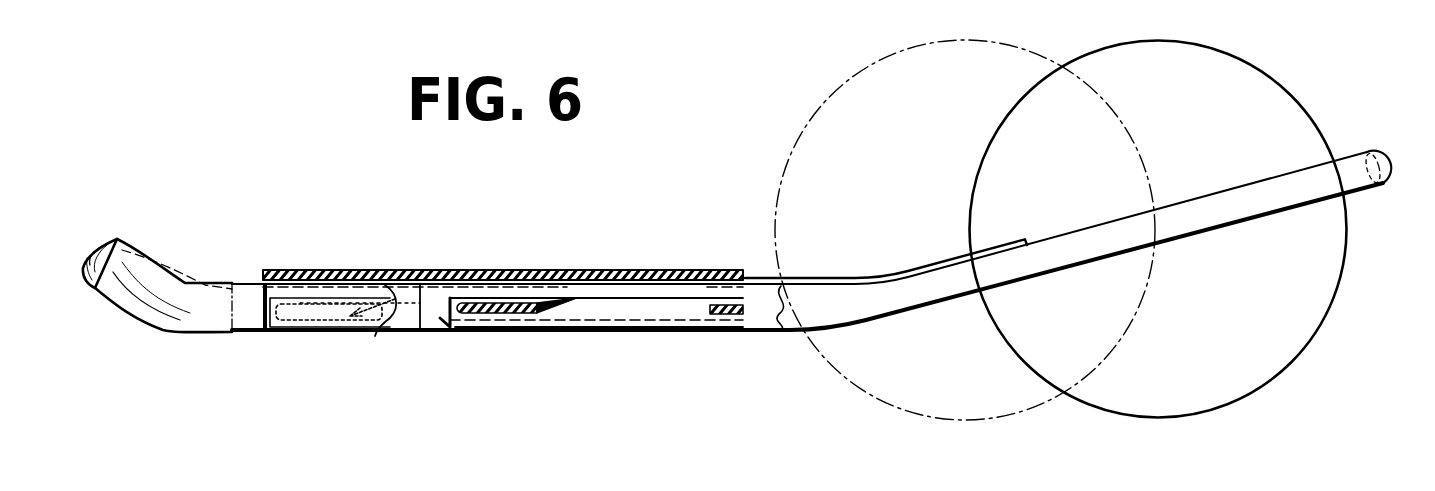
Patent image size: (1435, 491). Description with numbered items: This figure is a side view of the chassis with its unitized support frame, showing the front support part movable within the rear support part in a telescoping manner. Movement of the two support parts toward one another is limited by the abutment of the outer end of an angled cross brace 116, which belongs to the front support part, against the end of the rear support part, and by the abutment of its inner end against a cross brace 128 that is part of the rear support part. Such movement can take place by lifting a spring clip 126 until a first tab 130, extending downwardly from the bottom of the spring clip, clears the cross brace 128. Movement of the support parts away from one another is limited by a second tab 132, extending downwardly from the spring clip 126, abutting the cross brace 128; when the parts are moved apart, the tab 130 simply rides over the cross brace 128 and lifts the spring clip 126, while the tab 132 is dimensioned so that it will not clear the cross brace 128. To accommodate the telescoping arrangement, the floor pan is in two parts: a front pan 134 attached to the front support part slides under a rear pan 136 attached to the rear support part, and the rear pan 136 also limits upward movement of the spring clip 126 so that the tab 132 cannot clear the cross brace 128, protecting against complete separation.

The angled cross brace 116 is at (722, 314).
The spring clip 126 is at (632, 306).
The cross brace 128 is at (486, 320).
The first tab 130 is at (375, 336).
The second tab 132 is at (300, 331).
The front pan 134 is at (875, 277).
The rear pan 136 is at (498, 270).